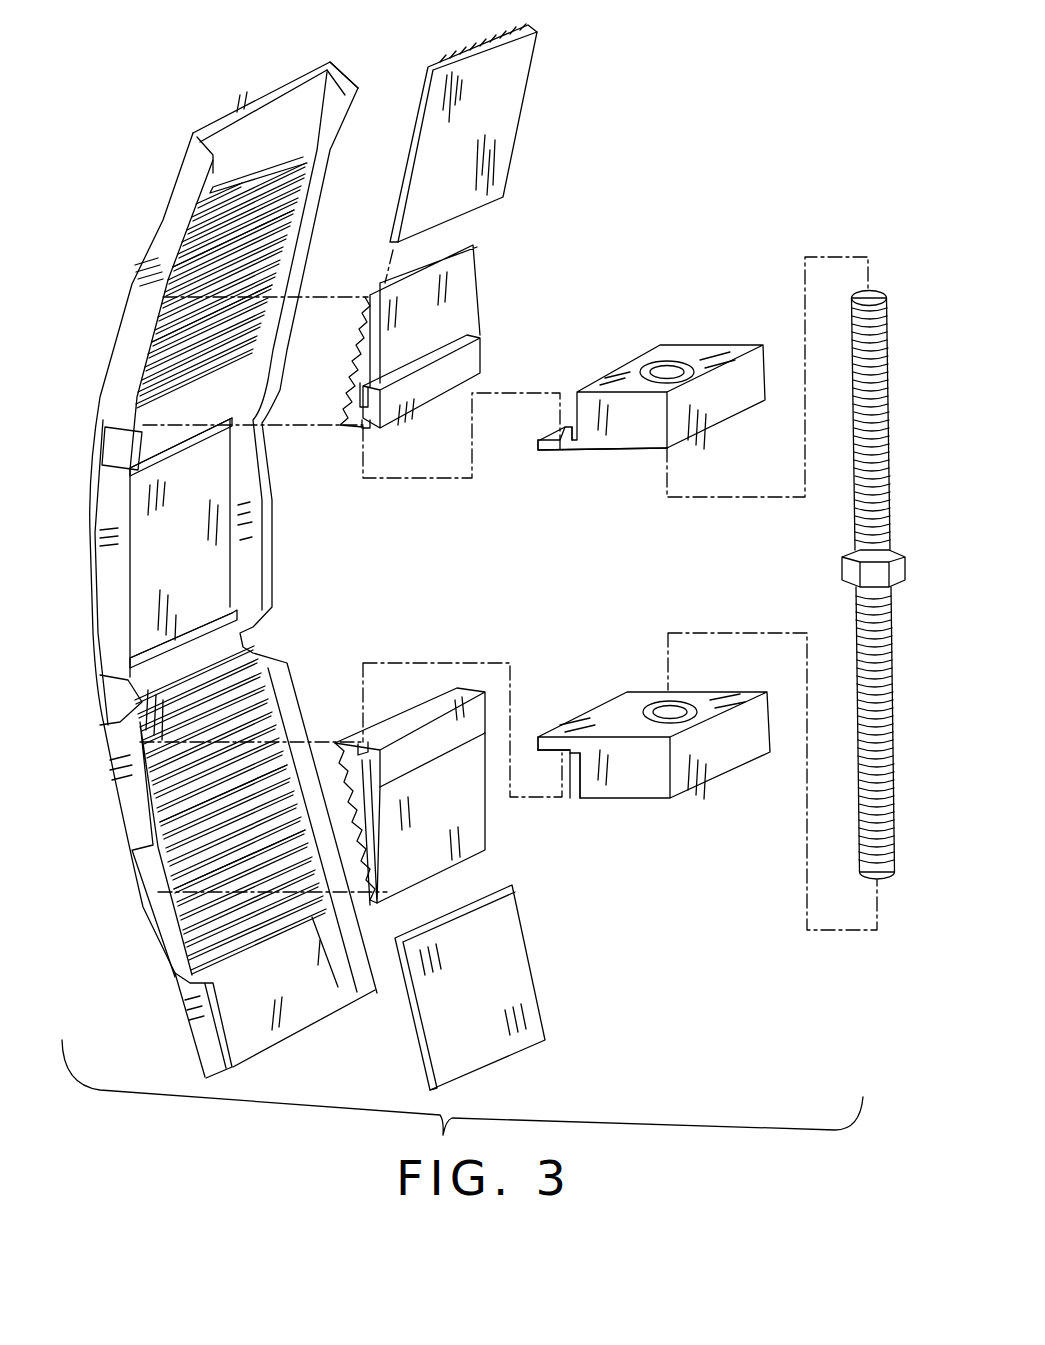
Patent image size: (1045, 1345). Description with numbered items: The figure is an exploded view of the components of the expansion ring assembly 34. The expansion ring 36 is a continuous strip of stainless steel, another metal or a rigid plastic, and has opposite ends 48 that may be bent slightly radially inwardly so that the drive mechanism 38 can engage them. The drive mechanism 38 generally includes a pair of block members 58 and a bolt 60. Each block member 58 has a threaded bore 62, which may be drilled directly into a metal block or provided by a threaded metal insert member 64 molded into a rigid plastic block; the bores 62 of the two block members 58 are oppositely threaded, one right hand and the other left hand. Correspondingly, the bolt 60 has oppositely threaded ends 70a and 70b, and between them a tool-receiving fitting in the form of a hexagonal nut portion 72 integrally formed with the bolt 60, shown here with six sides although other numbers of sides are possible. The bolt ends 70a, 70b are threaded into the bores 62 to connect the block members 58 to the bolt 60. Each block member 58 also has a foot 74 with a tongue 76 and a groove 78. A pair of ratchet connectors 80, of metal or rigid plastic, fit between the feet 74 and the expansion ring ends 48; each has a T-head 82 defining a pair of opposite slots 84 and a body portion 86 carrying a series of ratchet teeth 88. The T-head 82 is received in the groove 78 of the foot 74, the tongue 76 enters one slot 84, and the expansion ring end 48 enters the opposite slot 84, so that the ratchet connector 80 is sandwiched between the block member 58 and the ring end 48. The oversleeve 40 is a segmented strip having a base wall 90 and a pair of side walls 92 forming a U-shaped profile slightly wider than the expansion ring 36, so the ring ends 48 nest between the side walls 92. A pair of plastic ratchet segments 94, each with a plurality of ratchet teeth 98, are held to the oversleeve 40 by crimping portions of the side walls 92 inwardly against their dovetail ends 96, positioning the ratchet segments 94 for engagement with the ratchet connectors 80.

The expansion ring assembly 34 is at (690, 90).
The expansion ring 36 is at (510, 970).
The drive mechanism 38 is at (735, 282).
The oversleeve 40 is at (130, 155).
The ends 48 is at (513, 72).
The block members 58 is at (745, 372).
The bolt 60 is at (858, 512).
The threaded bore 62 is at (667, 372).
The threaded metal insert members 64 is at (682, 372).
The bolt end 70a is at (883, 355).
The bolt end 70b is at (868, 838).
The hexagonal nut portion 72 is at (850, 572).
The feet 74 is at (560, 450).
The tongue 76 is at (556, 428).
The groove 78 is at (572, 425).
The ratchet connectors 80 is at (525, 309).
The T-heads 82 is at (462, 363).
The slots 84 is at (363, 393).
The body portions 86 is at (436, 311).
The ratchet teeth 88 is at (345, 398).
The base wall 90 is at (273, 117).
The side walls 92 is at (196, 160).
The ratchet segments 94 is at (185, 335).
The dovetail ends 96 is at (170, 437).
The ratchet teeth 98 is at (175, 368).